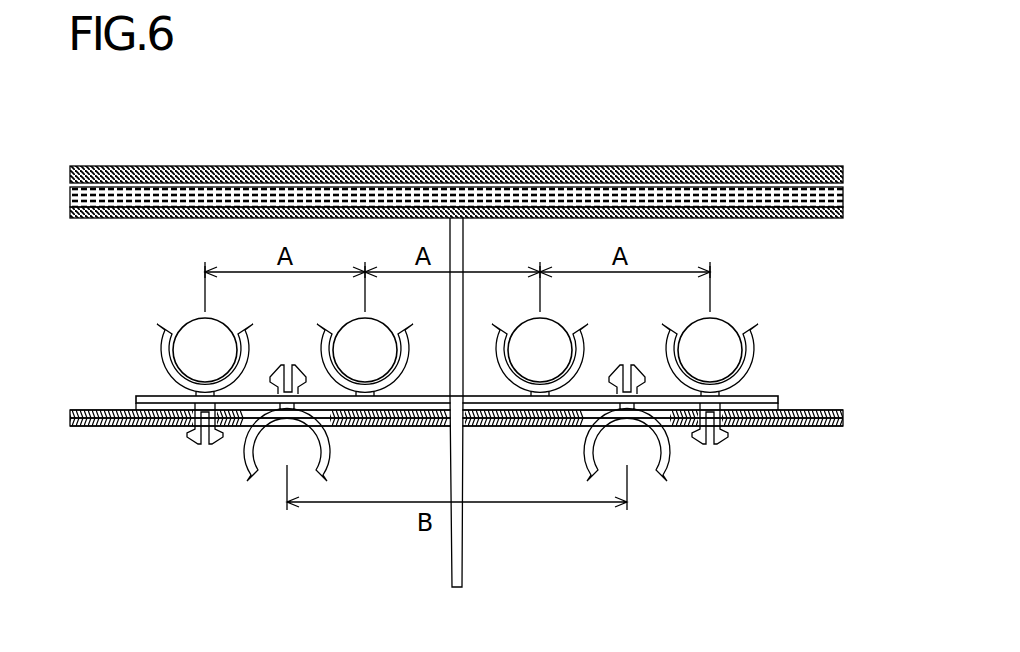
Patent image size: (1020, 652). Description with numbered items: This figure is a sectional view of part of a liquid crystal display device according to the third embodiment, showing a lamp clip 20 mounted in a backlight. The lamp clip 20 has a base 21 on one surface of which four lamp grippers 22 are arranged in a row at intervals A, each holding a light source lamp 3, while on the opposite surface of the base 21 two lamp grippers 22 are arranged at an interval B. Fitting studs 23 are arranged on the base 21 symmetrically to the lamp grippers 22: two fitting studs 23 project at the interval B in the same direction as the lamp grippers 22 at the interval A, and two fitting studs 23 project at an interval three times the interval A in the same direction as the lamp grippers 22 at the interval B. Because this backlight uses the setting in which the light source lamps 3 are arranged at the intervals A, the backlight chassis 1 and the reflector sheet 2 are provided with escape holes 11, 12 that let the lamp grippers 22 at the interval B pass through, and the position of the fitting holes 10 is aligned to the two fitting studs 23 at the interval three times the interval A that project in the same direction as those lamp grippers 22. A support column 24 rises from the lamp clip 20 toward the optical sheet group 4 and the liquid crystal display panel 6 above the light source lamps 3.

The backlight chassis 1 is at (102, 426).
The reflector sheet 2 is at (93, 410).
The light source lamp 3 is at (732, 318).
The optical sheet group 4 is at (762, 218).
The liquid crystal display panel 6 is at (762, 168).
The fitting hole 10 is at (742, 427).
The escape hole 11 is at (245, 430).
The escape hole 12 is at (466, 430).
The lamp clip 20 is at (463, 334).
The base 21 is at (432, 394).
The lamp gripper 22 is at (756, 350).
The fitting stud 23 is at (702, 444).
The support column 24 is at (464, 246).